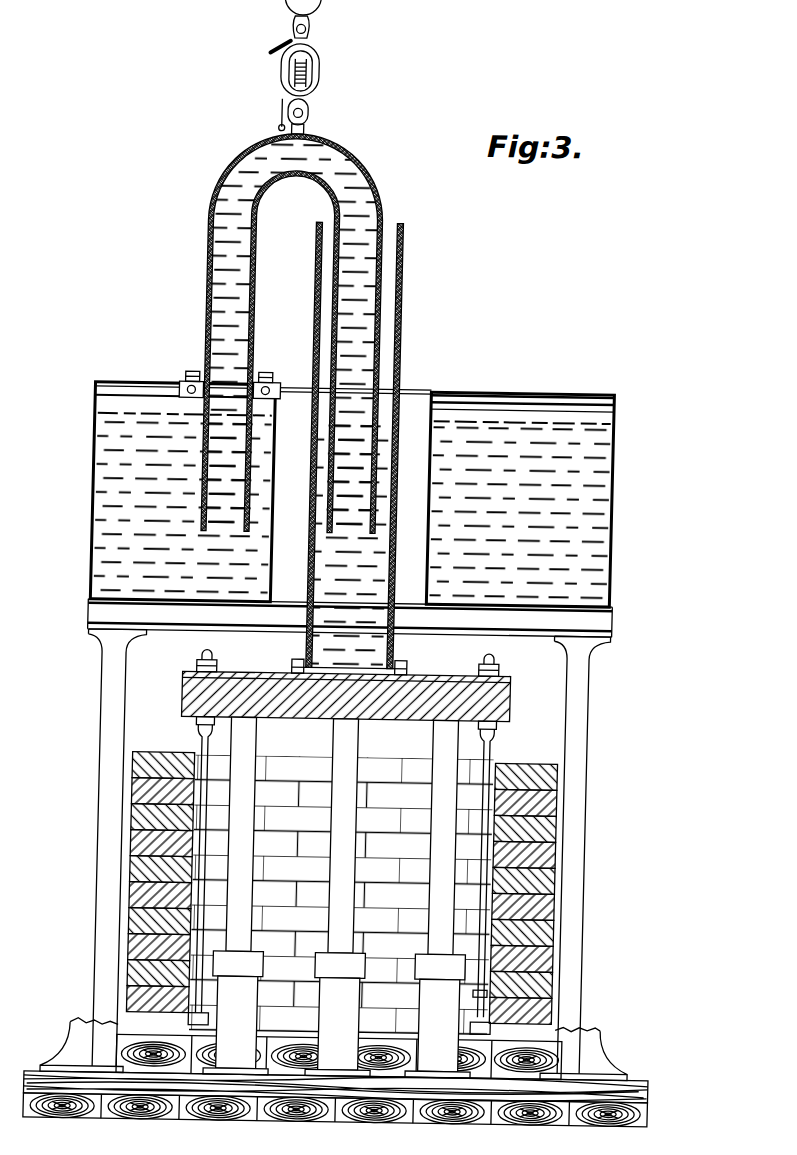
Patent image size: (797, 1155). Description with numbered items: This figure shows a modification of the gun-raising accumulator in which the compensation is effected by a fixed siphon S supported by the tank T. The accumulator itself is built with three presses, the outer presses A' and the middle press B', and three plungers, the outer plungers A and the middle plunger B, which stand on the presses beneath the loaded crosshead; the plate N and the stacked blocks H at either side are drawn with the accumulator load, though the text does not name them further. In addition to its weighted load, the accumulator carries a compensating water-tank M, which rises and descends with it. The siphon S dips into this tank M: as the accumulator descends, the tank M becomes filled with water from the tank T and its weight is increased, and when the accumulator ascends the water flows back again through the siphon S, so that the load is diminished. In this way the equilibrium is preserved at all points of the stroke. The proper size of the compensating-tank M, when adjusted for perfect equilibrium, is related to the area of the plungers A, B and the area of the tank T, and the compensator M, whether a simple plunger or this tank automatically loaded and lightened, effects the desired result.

The fixed siphon S is at (293, 333).
The tank T is at (352, 488).
The compensating water-tank M is at (355, 448).
The plate N is at (342, 841).
The plunger A is at (342, 836).
The plunger B is at (343, 836).
The press A' is at (338, 1014).
The press B' is at (339, 1014).
The hatched block stack H is at (341, 888).